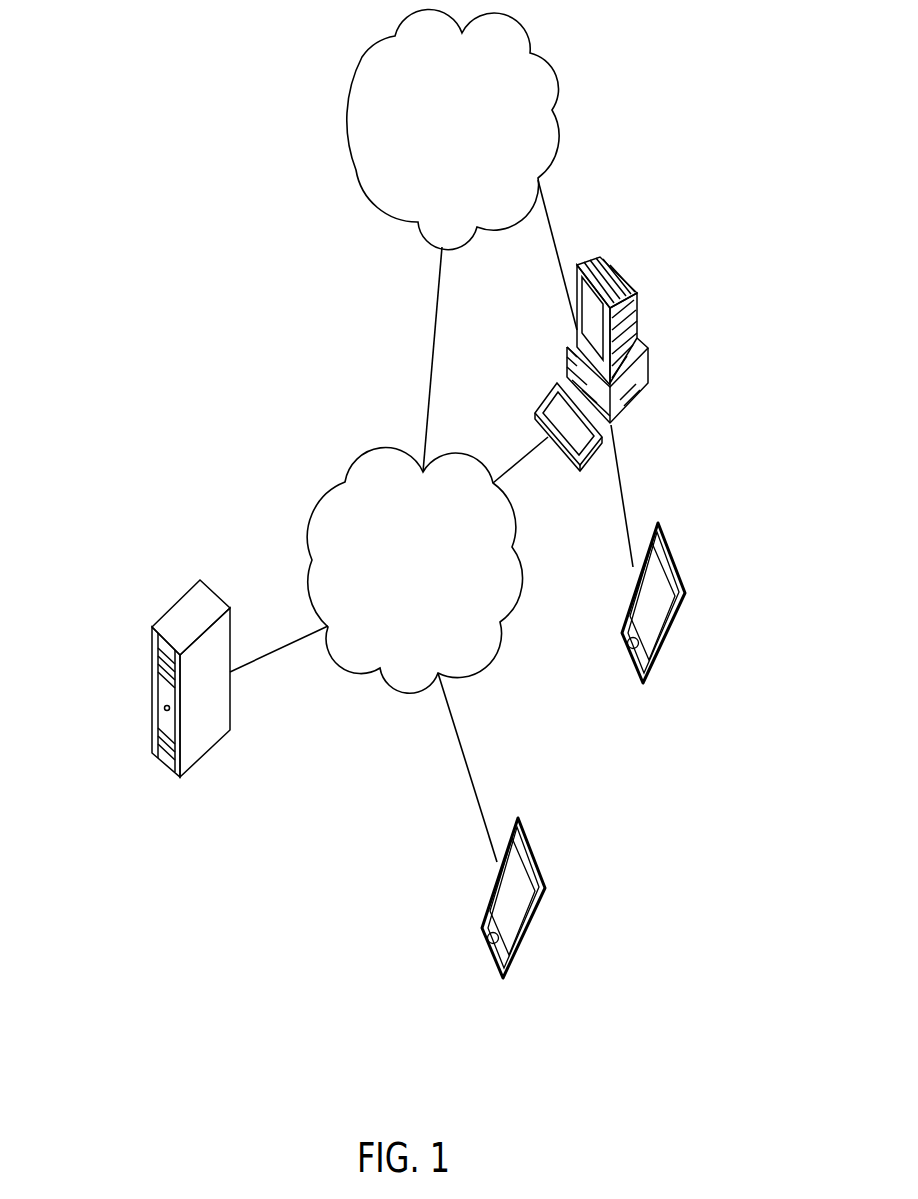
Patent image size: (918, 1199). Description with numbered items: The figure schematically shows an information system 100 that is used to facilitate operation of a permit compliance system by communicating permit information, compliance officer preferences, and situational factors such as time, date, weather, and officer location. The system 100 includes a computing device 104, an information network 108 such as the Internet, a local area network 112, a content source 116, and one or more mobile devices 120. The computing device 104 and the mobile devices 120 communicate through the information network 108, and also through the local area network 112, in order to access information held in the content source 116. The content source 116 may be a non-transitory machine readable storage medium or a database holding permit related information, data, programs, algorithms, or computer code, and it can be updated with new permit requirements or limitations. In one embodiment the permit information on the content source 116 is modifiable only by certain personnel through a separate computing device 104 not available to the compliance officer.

The system 100 is at (144, 85).
The computing device 104 is at (636, 282).
The information network 108 is at (340, 482).
The local area network 112 is at (361, 56).
The content source 116 is at (205, 577).
The mobile devices 120 is at (668, 530).